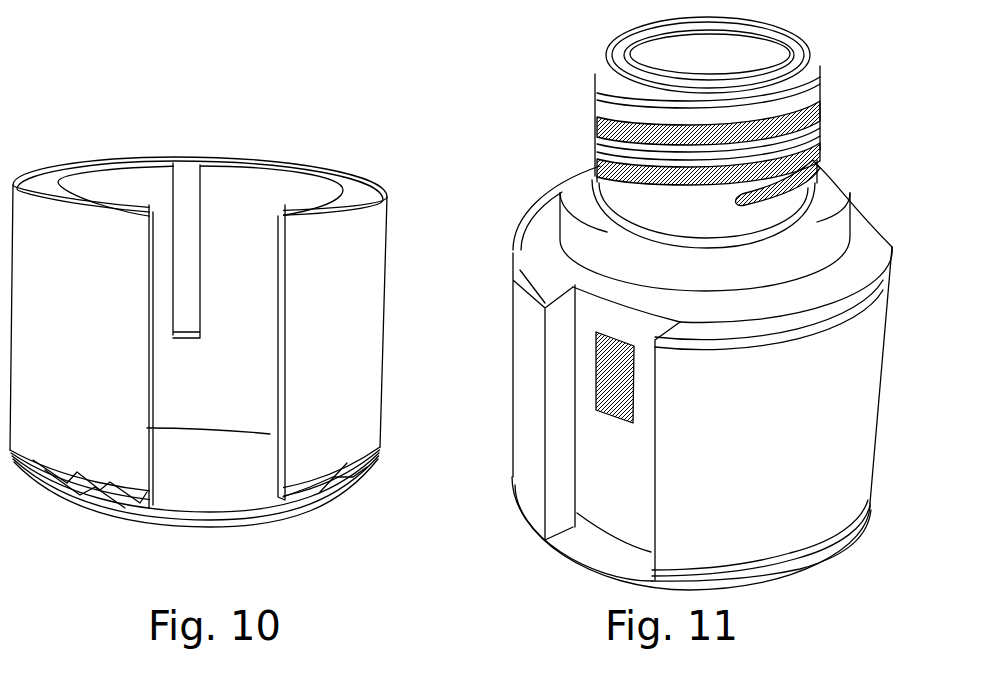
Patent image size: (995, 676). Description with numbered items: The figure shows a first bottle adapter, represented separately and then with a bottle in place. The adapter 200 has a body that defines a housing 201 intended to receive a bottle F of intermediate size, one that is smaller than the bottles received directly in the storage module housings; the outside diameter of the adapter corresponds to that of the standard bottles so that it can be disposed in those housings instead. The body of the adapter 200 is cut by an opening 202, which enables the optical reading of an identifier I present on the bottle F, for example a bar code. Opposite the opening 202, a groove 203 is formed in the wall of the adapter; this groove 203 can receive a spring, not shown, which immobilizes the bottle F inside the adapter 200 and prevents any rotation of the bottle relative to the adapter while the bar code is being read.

In FIG. 10, the adapter 200 is at (235, 304).
In FIG. 10, the housing 201 is at (243, 178).
In FIG. 10, the opening 202 is at (285, 363).
In FIG. 11, the opening 202 is at (567, 480).
In FIG. 10, the groove 203 is at (183, 172).
In FIG. 11, the bottle F is at (584, 197).
In FIG. 11, the identifier I is at (637, 368).